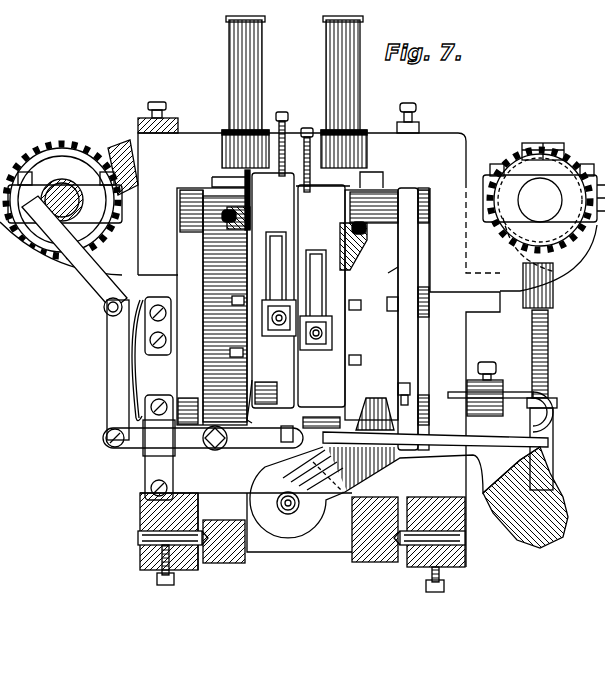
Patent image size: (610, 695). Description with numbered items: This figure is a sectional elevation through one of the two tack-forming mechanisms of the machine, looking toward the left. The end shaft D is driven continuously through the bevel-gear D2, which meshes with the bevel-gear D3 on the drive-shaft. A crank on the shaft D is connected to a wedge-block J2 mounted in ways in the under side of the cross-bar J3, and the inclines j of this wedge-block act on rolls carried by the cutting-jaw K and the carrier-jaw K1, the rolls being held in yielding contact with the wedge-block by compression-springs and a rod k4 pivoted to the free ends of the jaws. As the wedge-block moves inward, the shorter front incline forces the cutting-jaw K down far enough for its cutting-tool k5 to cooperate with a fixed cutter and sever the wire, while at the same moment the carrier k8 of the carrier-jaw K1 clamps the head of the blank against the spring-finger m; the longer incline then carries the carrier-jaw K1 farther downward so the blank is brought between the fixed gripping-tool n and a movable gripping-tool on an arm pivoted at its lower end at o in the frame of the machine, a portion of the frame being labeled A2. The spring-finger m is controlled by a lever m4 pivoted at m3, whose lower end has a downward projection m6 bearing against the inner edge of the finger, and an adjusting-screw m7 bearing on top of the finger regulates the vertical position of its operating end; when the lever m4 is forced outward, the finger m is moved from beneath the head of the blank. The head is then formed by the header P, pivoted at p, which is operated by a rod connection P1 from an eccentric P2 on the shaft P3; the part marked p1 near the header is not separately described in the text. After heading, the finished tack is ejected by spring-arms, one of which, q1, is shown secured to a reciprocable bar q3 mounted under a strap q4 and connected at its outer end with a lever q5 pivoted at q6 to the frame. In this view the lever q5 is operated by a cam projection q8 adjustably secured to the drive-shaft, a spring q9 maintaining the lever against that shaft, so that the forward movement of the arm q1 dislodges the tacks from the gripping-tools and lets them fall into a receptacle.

The cross-bar J3 is at (250, 189).
The bevel-gear D2 is at (122, 135).
The bevel-gear D3 is at (64, 186).
The cam projection q8 is at (10, 258).
The pivot q6 is at (105, 308).
The shaft P3 is at (544, 196).
The eccentric P2 is at (575, 222).
The frame A2 is at (432, 338).
The pivot o is at (138, 540).
The rod k4 is at (234, 176).
The cutting-jaw K is at (270, 298).
The cutting-tool k5 is at (284, 364).
The carrier-jaw K1 is at (346, 307).
The carrier k8 is at (315, 388).
The end shaft D is at (387, 319).
The lever m4 is at (387, 273).
The pivot m3 is at (390, 308).
The adjusting-screw m7 is at (400, 390).
The rod connection P1 is at (550, 332).
The downward projection m6 is at (450, 396).
The spring-finger m is at (556, 412).
The header P is at (572, 498).
The cam p1 is at (297, 492).
The pivot p is at (288, 510).
The lever q5 is at (114, 362).
The spring q9 is at (140, 368).
The strap q4 is at (140, 447).
The spring-arm q1 is at (203, 438).
The reciprocable bar q3 is at (203, 438).
The fixed gripping-tool n is at (285, 424).
The wedge-block J2 is at (296, 175).
The incline j is at (328, 180).